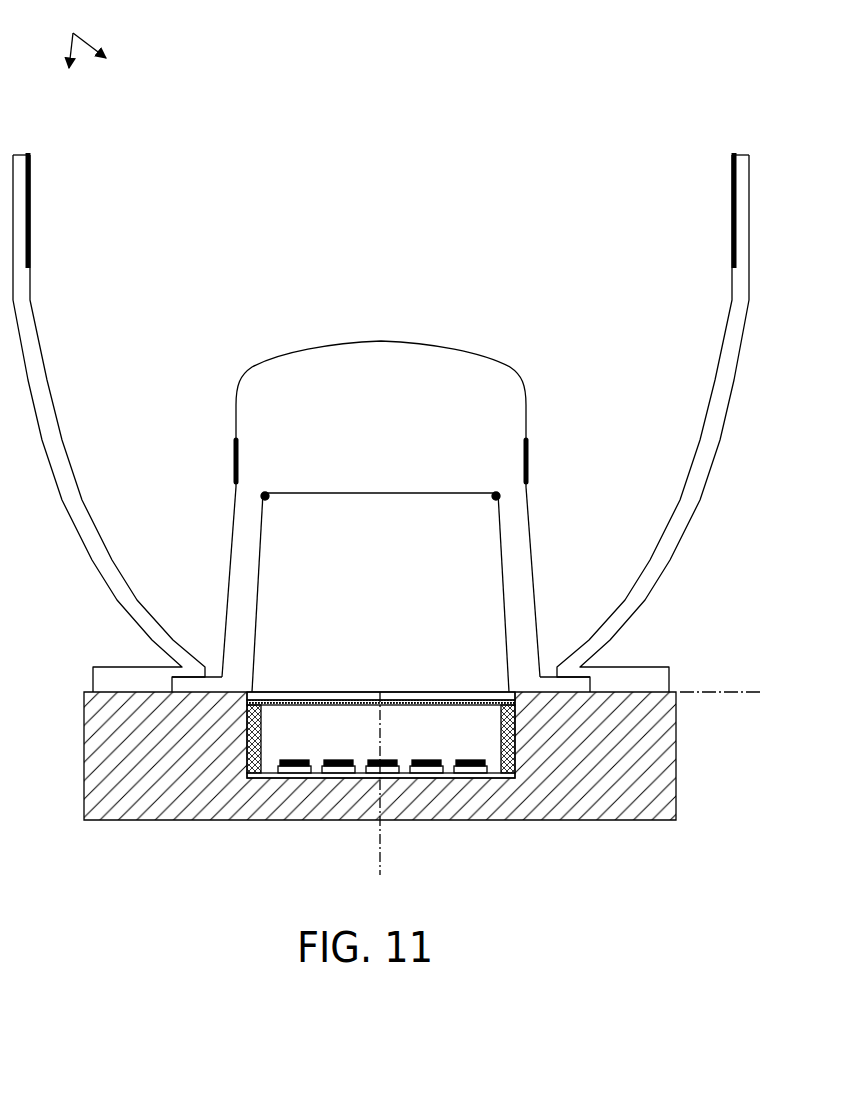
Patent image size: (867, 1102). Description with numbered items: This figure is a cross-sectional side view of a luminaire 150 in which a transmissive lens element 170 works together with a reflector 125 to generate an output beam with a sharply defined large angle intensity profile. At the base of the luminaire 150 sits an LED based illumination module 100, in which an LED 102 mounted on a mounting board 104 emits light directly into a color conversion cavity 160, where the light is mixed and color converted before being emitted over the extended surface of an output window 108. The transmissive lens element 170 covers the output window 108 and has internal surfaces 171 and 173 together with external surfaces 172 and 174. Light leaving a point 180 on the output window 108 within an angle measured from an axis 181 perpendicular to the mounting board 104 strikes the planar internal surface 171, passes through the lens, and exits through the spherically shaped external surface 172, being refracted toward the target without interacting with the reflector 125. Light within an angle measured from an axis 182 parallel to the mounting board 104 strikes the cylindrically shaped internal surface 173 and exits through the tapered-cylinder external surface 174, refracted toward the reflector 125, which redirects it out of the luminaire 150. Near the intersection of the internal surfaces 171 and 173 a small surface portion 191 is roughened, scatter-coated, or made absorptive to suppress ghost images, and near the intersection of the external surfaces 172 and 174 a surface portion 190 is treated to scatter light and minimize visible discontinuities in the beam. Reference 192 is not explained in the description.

The LED based illumination module 100 is at (173, 821).
The LED 102 is at (430, 768).
The mounting board 104 is at (306, 778).
The output window 108 is at (283, 692).
The reflector 125 is at (93, 562).
The luminaire 150 is at (75, 41).
The color conversion cavity 160 is at (348, 733).
The transmissive lens element 170 is at (380, 496).
The internal surface 171 is at (383, 494).
The external surface 172 is at (440, 343).
The internal surface 173 is at (500, 543).
The external surface 174 is at (530, 545).
The point 180 is at (381, 692).
The axis 181 is at (382, 847).
The axis 182 is at (693, 692).
The surface portion 190 is at (233, 458).
The surface portion 191 is at (268, 498).
The arm reflector elements 192 is at (32, 199).